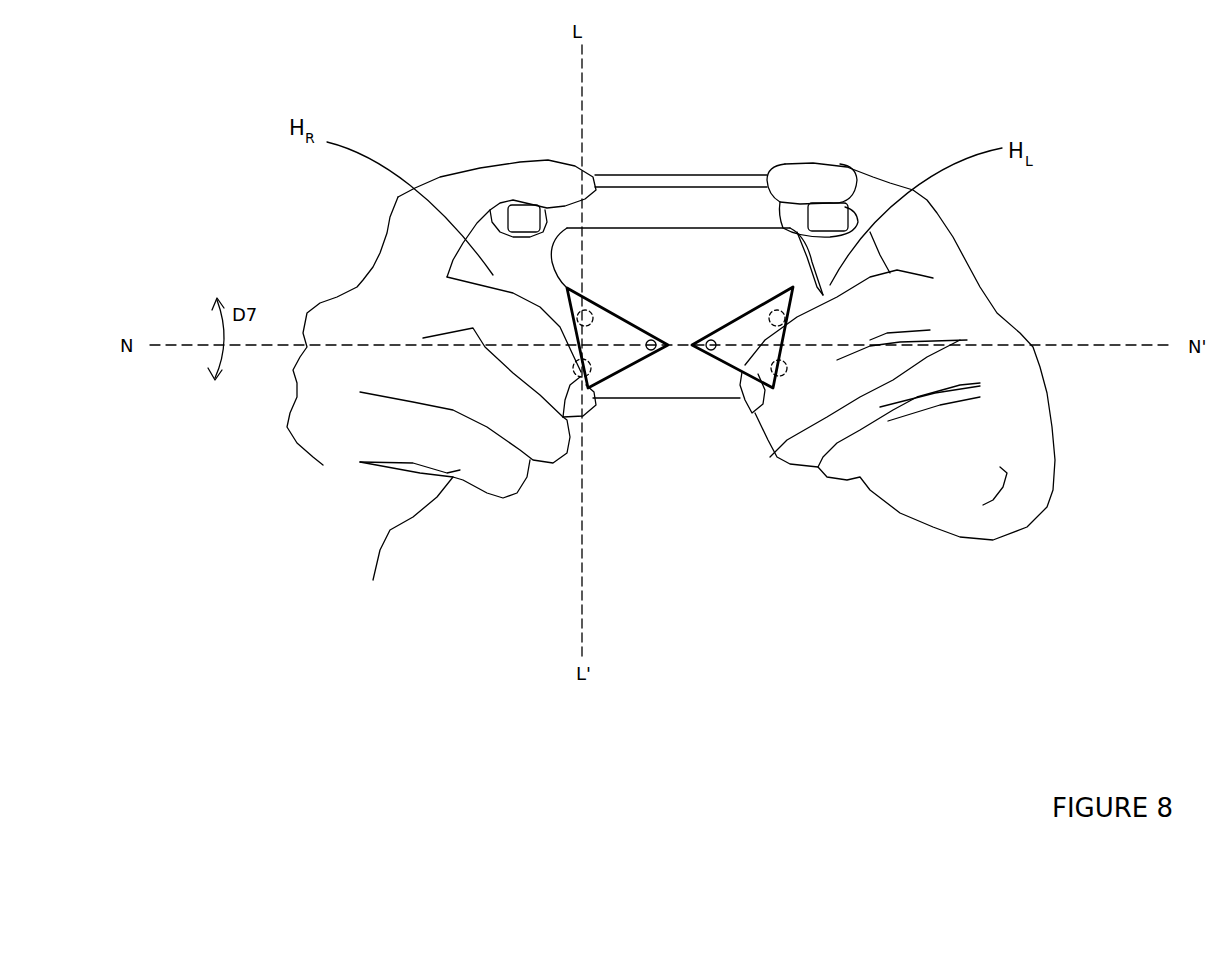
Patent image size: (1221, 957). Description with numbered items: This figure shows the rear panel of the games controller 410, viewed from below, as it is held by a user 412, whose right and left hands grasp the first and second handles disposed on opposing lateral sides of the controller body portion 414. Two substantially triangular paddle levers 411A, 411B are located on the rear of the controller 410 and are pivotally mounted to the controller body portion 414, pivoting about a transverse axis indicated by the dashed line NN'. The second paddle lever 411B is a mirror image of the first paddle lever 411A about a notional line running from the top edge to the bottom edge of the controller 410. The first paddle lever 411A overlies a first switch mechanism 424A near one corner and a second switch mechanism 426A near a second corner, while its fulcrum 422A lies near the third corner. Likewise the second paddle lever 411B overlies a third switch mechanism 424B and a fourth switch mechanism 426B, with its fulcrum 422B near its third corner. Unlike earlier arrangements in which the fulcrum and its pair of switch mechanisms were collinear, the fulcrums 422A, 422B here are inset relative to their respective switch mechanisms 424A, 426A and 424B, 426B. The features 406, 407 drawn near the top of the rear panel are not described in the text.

The left operation button 406 is at (835, 212).
The right operation button 407 is at (520, 213).
The games controller 410 is at (676, 190).
The first paddle lever 411A is at (619, 347).
The second paddle lever 411B is at (767, 340).
The user 412 is at (528, 335).
The controller body portion 414 is at (698, 325).
The fulcrum 422A is at (660, 347).
The fulcrum 422B is at (703, 347).
The first switch mechanism 424A is at (592, 310).
The third switch mechanism 424B is at (768, 310).
The second switch mechanism 426A is at (595, 357).
The fourth switch mechanism 426B is at (775, 378).